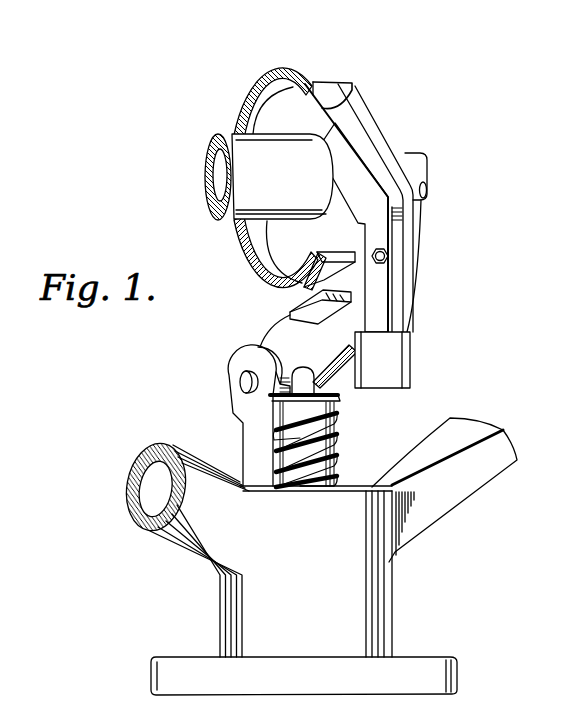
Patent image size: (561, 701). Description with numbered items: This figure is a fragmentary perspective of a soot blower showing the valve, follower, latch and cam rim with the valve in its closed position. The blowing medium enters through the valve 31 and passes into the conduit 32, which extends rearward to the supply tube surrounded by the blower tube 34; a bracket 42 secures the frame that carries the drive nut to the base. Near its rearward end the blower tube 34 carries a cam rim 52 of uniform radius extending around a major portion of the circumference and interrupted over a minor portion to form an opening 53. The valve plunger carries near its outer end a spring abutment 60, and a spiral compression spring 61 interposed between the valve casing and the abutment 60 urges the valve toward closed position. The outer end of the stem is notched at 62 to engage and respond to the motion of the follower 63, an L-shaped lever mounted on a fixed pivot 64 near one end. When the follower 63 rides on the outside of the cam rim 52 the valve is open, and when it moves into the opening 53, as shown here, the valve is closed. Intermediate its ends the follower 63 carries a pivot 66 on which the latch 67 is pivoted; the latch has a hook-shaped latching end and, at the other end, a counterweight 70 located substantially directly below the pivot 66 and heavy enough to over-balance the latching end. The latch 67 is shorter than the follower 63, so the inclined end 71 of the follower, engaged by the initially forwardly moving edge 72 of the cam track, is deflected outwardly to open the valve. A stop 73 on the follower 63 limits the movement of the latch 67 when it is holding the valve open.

The valve 31 is at (309, 567).
The conduit 32 is at (188, 462).
The blower tube 34 is at (269, 177).
The bracket 42 is at (466, 490).
The cam rim 52 is at (241, 262).
The opening 53 is at (332, 235).
The spring abutment 60 is at (340, 399).
The spiral compression spring 61 is at (338, 441).
The notch 62 is at (303, 366).
The follower 63 is at (348, 340).
The fixed pivot 64 is at (240, 381).
The pivot 66 is at (392, 256).
The latch 67 is at (350, 166).
The counterweight 70 is at (391, 364).
The inclined end 71 is at (340, 96).
The forwardly moving edge 72 is at (326, 82).
The stop 73 is at (303, 311).